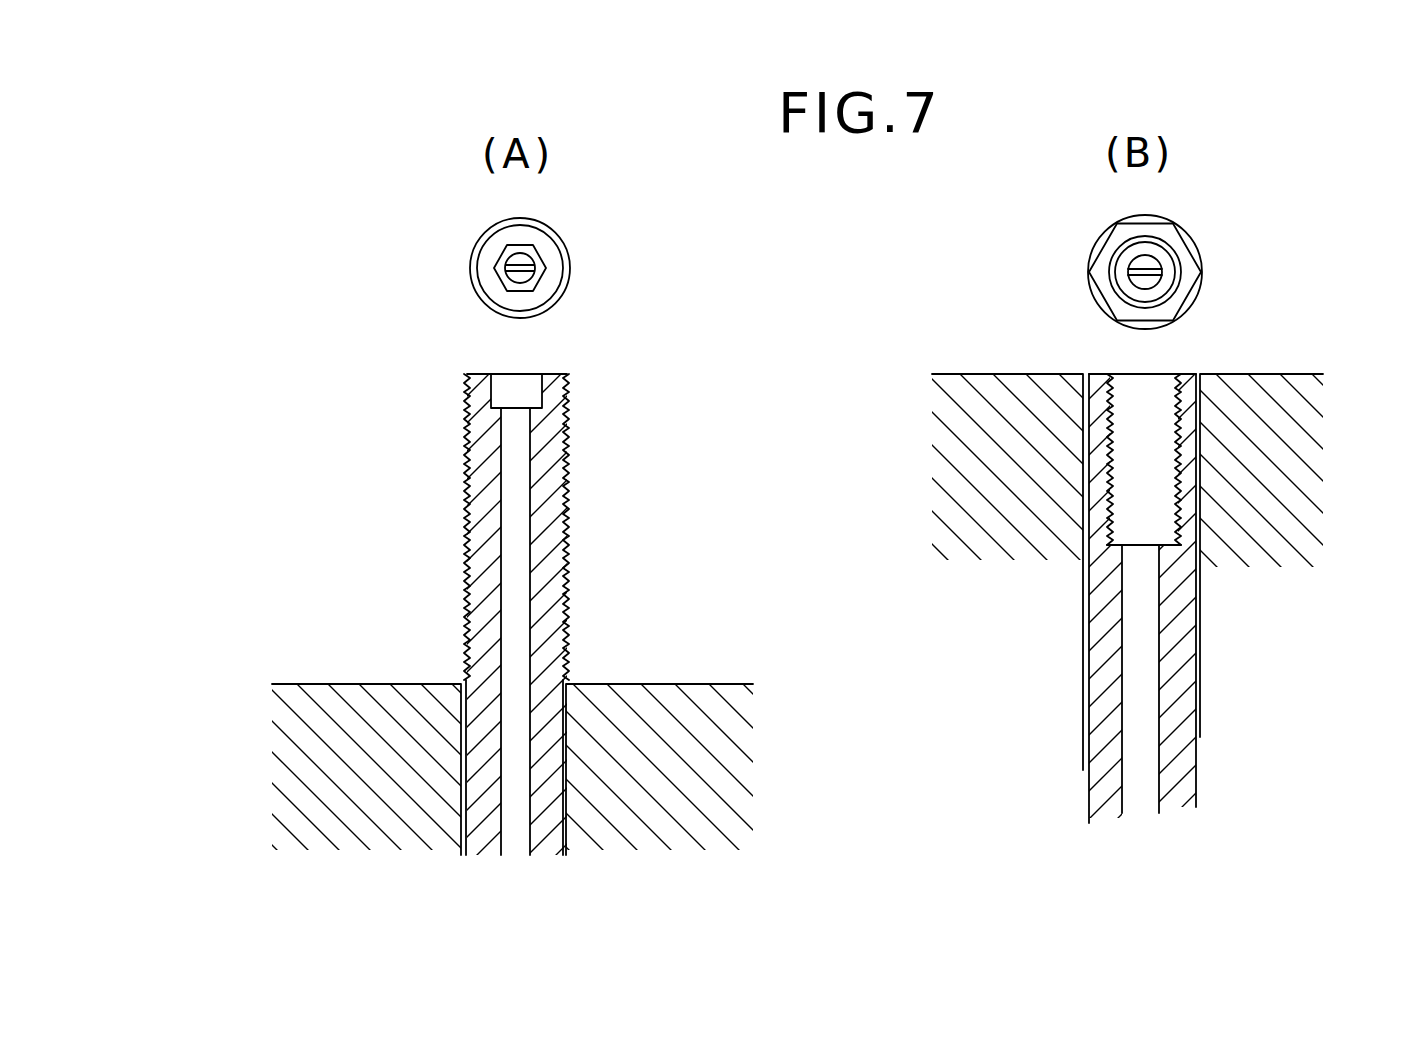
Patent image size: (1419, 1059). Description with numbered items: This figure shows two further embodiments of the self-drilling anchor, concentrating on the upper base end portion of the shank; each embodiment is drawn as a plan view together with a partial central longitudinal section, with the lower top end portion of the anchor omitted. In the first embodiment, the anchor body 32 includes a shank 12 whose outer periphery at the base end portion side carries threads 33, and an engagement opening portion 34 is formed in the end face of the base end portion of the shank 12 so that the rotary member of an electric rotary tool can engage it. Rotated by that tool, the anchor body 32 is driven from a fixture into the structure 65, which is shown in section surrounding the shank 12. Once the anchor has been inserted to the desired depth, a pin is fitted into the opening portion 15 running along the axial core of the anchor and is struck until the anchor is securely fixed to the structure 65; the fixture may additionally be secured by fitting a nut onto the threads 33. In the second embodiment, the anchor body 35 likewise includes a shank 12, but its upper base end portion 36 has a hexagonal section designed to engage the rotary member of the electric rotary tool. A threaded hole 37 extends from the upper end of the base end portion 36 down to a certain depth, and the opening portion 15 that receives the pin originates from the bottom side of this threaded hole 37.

The shank 12 is at (547, 568).
The opening portion 15 is at (514, 600).
The anchor body 32 is at (570, 446).
The threads 33 is at (468, 457).
The engagement opening portion 34 is at (527, 253).
The anchor body 35 is at (1161, 366).
The upper base end portion 36 is at (1166, 232).
The threaded hole 37 is at (1108, 440).
The structure 65 is at (385, 795).